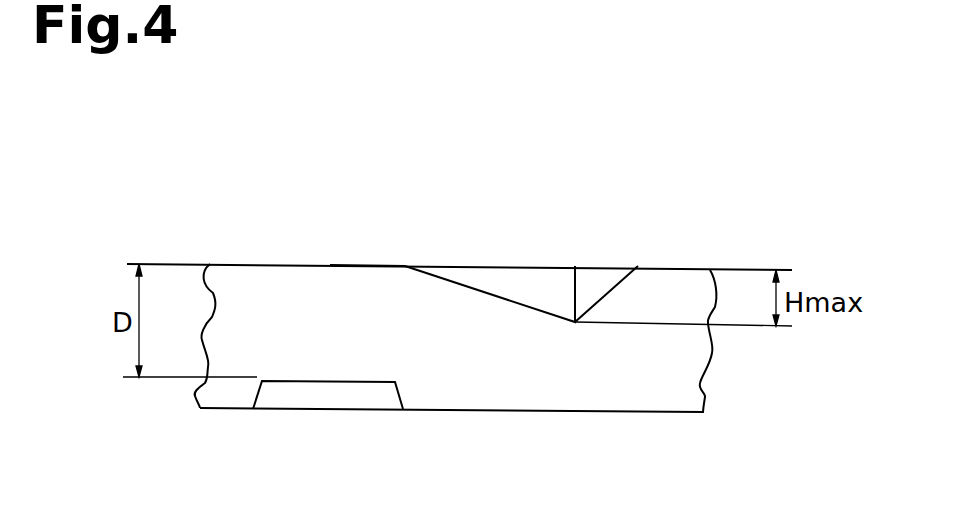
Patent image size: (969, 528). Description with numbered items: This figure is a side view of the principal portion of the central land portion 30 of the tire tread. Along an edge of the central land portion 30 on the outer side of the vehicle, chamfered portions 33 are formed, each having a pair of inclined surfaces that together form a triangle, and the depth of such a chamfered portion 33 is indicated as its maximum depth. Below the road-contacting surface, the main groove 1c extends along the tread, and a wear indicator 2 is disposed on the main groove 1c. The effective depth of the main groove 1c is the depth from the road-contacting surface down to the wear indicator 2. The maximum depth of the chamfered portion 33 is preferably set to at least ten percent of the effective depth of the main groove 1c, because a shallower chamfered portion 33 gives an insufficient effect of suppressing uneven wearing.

The main groove 1c is at (307, 295).
The central land portion 30 is at (368, 264).
The chamfered portion 33 is at (548, 282).
The wear indicator 2 is at (305, 397).